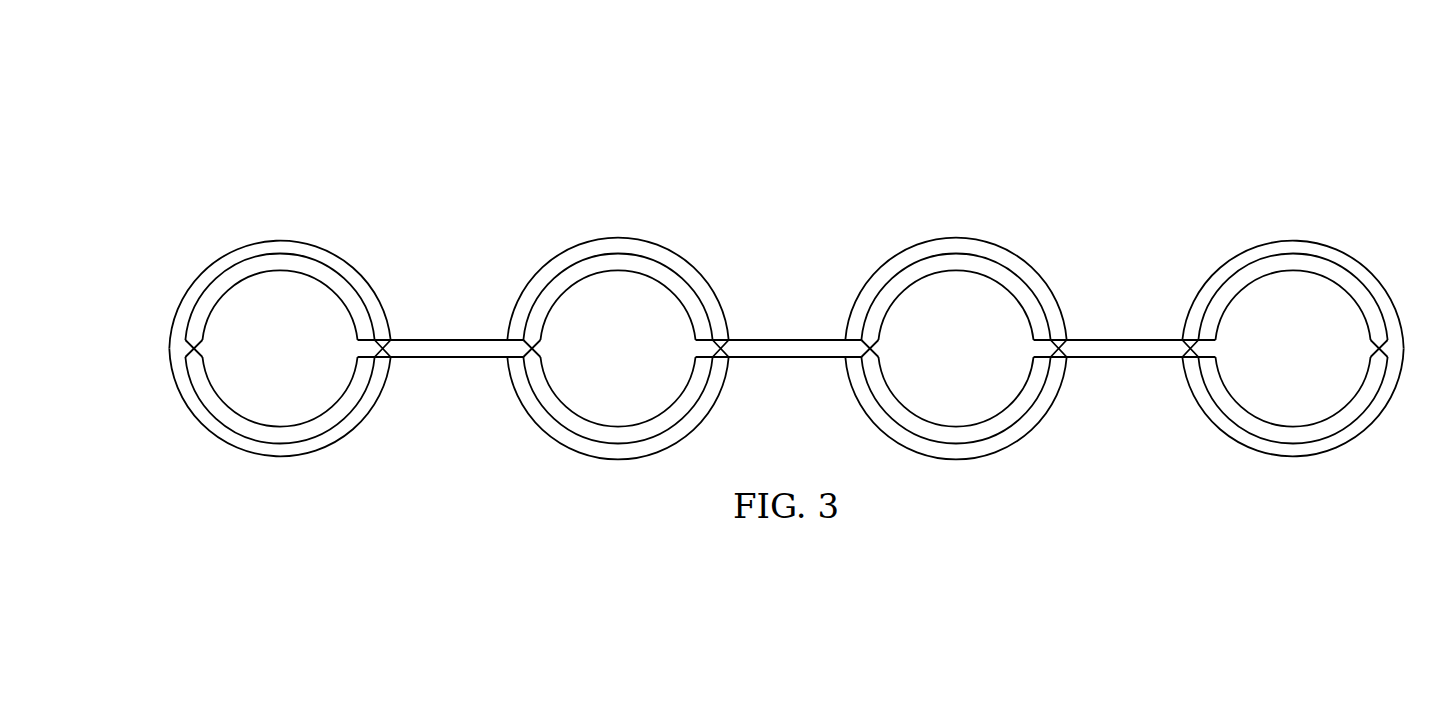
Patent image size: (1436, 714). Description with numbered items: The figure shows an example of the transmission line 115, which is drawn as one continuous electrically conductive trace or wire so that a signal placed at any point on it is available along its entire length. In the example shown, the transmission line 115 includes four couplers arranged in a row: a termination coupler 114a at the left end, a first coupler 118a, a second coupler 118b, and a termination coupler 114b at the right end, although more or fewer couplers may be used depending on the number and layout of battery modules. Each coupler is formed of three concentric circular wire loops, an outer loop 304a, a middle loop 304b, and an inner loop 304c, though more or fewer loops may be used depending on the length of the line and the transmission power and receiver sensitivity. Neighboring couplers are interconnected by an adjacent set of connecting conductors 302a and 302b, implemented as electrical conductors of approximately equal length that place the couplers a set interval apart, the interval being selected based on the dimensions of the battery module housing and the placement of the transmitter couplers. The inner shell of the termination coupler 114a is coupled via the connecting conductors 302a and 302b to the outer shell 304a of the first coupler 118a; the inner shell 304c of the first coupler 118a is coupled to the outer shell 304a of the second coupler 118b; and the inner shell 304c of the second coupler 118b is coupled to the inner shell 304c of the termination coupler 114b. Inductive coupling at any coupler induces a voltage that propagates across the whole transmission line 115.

The transmission line 115 is at (400, 110).
The termination coupler 114a is at (233, 182).
The termination coupler 114b is at (1339, 182).
The first coupler 118a is at (571, 183).
The second coupler 118b is at (1002, 182).
The connecting conductor 302a is at (450, 339).
The connecting conductor 302b is at (447, 358).
The outer loop 304a is at (280, 237).
The middle loop 304b is at (237, 262).
The inner loop 304c is at (316, 273).